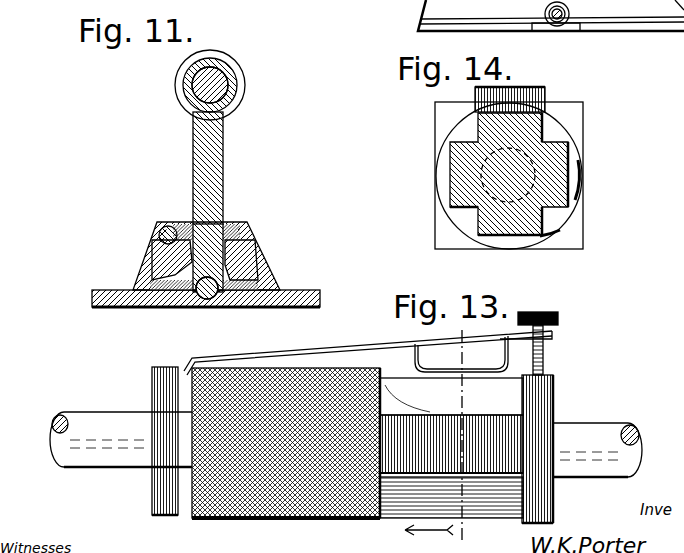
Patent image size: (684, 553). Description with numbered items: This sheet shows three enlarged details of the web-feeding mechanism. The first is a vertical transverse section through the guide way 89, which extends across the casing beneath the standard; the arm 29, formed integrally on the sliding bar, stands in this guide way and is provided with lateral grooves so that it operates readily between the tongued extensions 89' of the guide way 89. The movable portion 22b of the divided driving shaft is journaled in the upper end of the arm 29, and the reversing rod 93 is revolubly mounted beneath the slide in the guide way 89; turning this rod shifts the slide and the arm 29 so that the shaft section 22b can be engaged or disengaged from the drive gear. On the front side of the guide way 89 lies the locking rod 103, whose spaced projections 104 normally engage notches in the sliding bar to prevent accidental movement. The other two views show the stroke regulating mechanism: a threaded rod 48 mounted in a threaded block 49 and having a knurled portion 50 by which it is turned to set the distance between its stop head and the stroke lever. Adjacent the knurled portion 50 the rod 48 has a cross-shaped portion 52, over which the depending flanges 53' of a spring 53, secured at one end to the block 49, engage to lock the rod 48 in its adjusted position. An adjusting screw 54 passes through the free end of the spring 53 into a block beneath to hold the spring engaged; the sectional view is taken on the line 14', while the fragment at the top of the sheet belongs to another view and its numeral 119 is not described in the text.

In FIG. 11, the movable portion of the driving shaft 22b is at (216, 80).
In FIG. 11, the arm 29 is at (217, 165).
In FIG. 11, the guide way 89 is at (207, 248).
In FIG. 11, the tongued extensions of the guide way 89' is at (202, 264).
In FIG. 11, the reversing rod 93 is at (204, 300).
In FIG. 11, the locking rod 103 is at (160, 236).
In FIG. 11, the projections 104 is at (168, 226).
In FIG. 14, the pivot 119 is at (570, 15).
In FIG. 13, the threaded rod 48 is at (592, 472).
In FIG. 14, the threaded block 49 is at (565, 236).
In FIG. 13, the threaded block 49 is at (152, 390).
In FIG. 14, the knurled portion 50 is at (572, 160).
In FIG. 13, the knurled portion 50 is at (272, 518).
In FIG. 14, the cross-shaped portion 52 is at (460, 168).
In FIG. 14, the spring 53 is at (522, 89).
In FIG. 13, the spring 53 is at (368, 348).
In FIG. 14, the depending flanges 53' is at (510, 88).
In FIG. 13, the depending flanges 53' is at (490, 429).
In FIG. 13, the adjusting screw 54 is at (546, 313).
In FIG. 13, the section line 14' is at (441, 419).